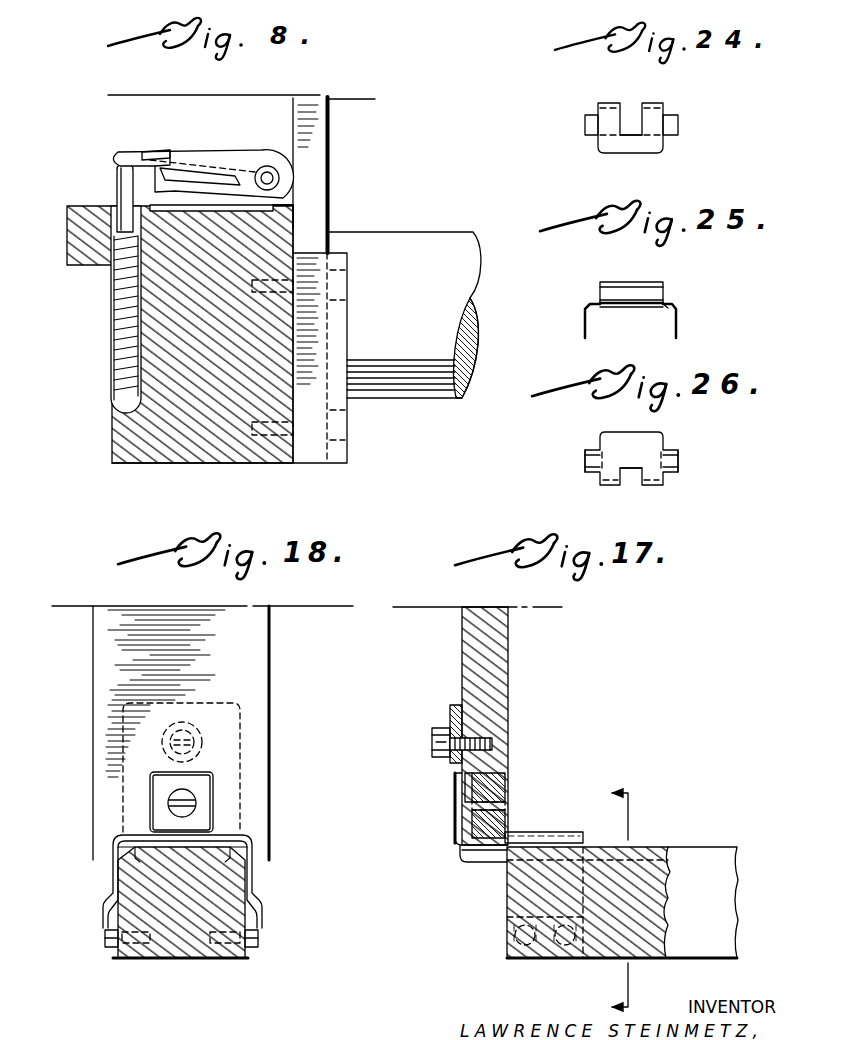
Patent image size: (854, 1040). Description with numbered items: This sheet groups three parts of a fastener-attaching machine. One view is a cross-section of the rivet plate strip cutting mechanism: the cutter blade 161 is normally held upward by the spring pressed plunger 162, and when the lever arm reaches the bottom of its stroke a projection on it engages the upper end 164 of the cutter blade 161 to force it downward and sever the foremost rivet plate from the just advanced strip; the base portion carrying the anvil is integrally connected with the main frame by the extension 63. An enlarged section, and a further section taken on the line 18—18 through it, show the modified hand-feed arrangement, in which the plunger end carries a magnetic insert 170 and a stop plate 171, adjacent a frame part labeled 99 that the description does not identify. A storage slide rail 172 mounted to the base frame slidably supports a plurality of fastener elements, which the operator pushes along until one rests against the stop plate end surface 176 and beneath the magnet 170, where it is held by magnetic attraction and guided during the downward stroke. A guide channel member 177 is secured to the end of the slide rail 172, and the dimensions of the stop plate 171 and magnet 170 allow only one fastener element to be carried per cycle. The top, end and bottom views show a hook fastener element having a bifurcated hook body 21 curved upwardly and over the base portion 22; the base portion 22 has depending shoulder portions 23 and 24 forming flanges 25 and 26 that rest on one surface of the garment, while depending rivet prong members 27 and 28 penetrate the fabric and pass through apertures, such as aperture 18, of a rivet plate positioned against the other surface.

In FIG. 17, the aperture 18 is at (642, 898).
In FIG. 24, the bifurcated hook body 21 is at (650, 148).
In FIG. 25, the bifurcated hook body 21 is at (655, 293).
In FIG. 26, the bifurcated hook body 21 is at (655, 438).
In FIG. 24, the base portion 22 is at (628, 125).
In FIG. 25, the base portion 22 is at (625, 300).
In FIG. 26, the base portion 22 is at (632, 466).
In FIG. 25, the depending shoulder portion 23 is at (668, 308).
In FIG. 25, the depending shoulder portion 24 is at (630, 316).
In FIG. 25, the flange 25 is at (668, 306).
In FIG. 25, the flange 26 is at (596, 305).
In FIG. 25, the depending rivet prong member 27 is at (680, 330).
In FIG. 26, the depending rivet prong member 27 is at (680, 462).
In FIG. 25, the depending rivet prong member 28 is at (583, 330).
In FIG. 26, the depending rivet prong member 28 is at (582, 462).
In FIG. 8, the extension 63 is at (428, 378).
In FIG. 18, the wall 99 is at (250, 668).
In FIG. 17, the wall 99 is at (495, 665).
In FIG. 8, the cutter blade 161 is at (240, 135).
In FIG. 8, the spring pressed plunger 162 is at (116, 190).
In FIG. 8, the upper end of cutter blade 164 is at (143, 142).
In FIG. 18, the magnetic insert 170 is at (200, 812).
In FIG. 17, the magnetic insert 170 is at (492, 783).
In FIG. 17, the stop plate 171 is at (455, 822).
In FIG. 18, the storage slide rail 172 is at (195, 950).
In FIG. 17, the storage slide rail 172 is at (702, 862).
In FIG. 17, the stop plate end surface 176 is at (478, 860).
In FIG. 18, the guide channel member 177 is at (262, 887).